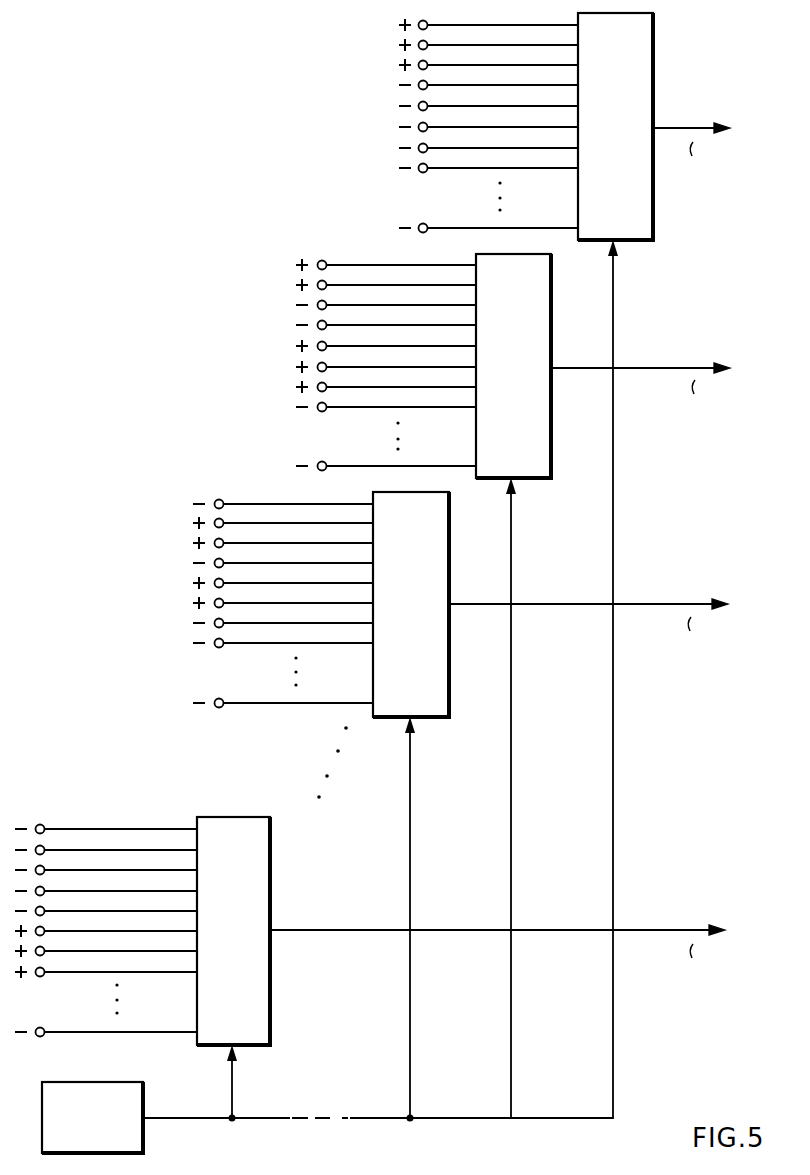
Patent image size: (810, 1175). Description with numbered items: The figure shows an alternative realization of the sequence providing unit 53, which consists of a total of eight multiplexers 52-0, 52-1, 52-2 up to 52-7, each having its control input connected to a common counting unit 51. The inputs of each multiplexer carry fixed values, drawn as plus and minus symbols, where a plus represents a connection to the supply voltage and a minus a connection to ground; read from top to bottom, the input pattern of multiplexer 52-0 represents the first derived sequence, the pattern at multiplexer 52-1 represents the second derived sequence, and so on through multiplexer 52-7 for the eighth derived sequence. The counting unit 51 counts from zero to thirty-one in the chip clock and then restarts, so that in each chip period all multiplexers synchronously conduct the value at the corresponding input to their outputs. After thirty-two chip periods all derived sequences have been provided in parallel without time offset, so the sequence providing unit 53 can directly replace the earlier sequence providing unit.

The counting unit 51 is at (144, 1138).
The multiplexer 52-0 is at (655, 52).
The multiplexer 52-1 is at (575, 293).
The multiplexer 52-2 is at (473, 543).
The multiplexer 52-7 is at (272, 853).
The sequence providing unit 53 is at (108, 446).